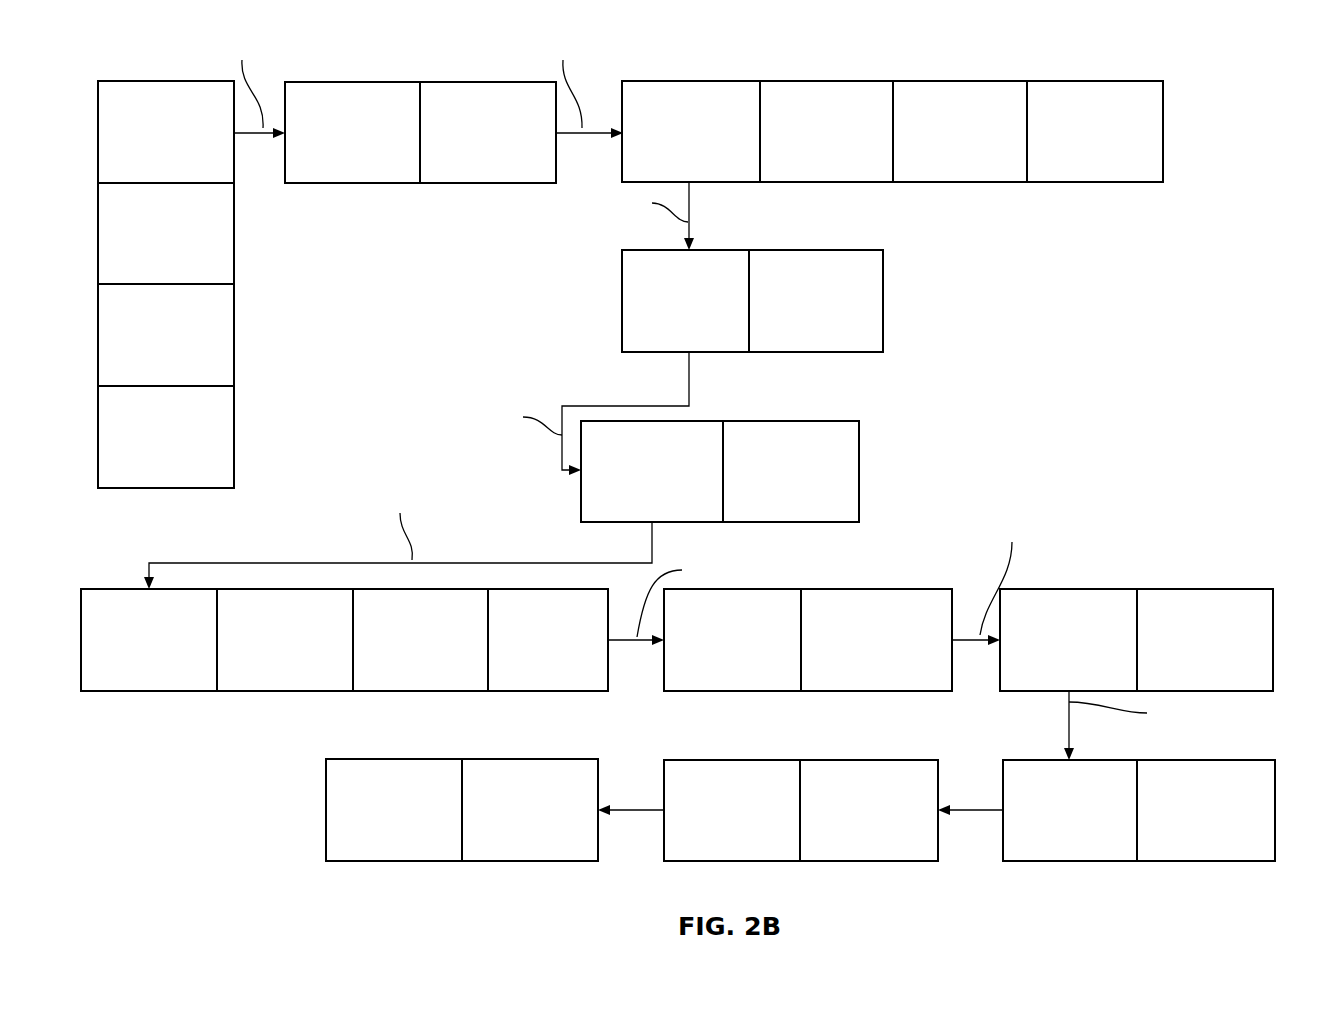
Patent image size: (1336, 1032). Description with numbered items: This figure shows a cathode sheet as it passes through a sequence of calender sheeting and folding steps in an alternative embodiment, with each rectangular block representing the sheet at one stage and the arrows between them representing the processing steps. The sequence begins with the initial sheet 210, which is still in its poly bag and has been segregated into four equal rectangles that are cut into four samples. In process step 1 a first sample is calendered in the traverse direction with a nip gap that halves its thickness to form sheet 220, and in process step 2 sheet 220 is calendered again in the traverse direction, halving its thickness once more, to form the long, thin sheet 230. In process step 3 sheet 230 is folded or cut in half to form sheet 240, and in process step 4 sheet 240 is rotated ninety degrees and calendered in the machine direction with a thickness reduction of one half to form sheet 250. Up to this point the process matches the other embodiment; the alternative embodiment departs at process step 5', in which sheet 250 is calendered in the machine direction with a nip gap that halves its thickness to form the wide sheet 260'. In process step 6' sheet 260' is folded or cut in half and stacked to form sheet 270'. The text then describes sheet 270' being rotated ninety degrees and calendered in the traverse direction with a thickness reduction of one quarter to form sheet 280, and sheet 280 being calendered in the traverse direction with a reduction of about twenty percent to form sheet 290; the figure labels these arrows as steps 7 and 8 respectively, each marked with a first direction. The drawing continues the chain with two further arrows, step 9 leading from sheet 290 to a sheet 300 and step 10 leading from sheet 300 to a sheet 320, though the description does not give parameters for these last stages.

The initial sheet 210 is at (234, 293).
The sheet 220 is at (477, 82).
The sheet 230 is at (853, 81).
The sheet 240 is at (850, 250).
The sheet 250 is at (850, 421).
The sheet 260' is at (344, 600).
The sheet 270' is at (808, 599).
The sheet 280 is at (1252, 589).
The sheet 290 is at (1258, 760).
The sheet after step 9 300 is at (906, 760).
The final sheet after step 10 320 is at (371, 759).
The process step 1 is at (298, 100).
The process step 2 is at (621, 100).
The process step 3 is at (602, 216).
The process step 4 is at (516, 413).
The process step 5' is at (398, 536).
The process step 6' is at (718, 590).
The process step 7 (first direction) 7 is at (1045, 578).
The process step 8 (first direction) 8 is at (1147, 725).
The process step 9 is at (970, 797).
The process step 10 is at (631, 797).